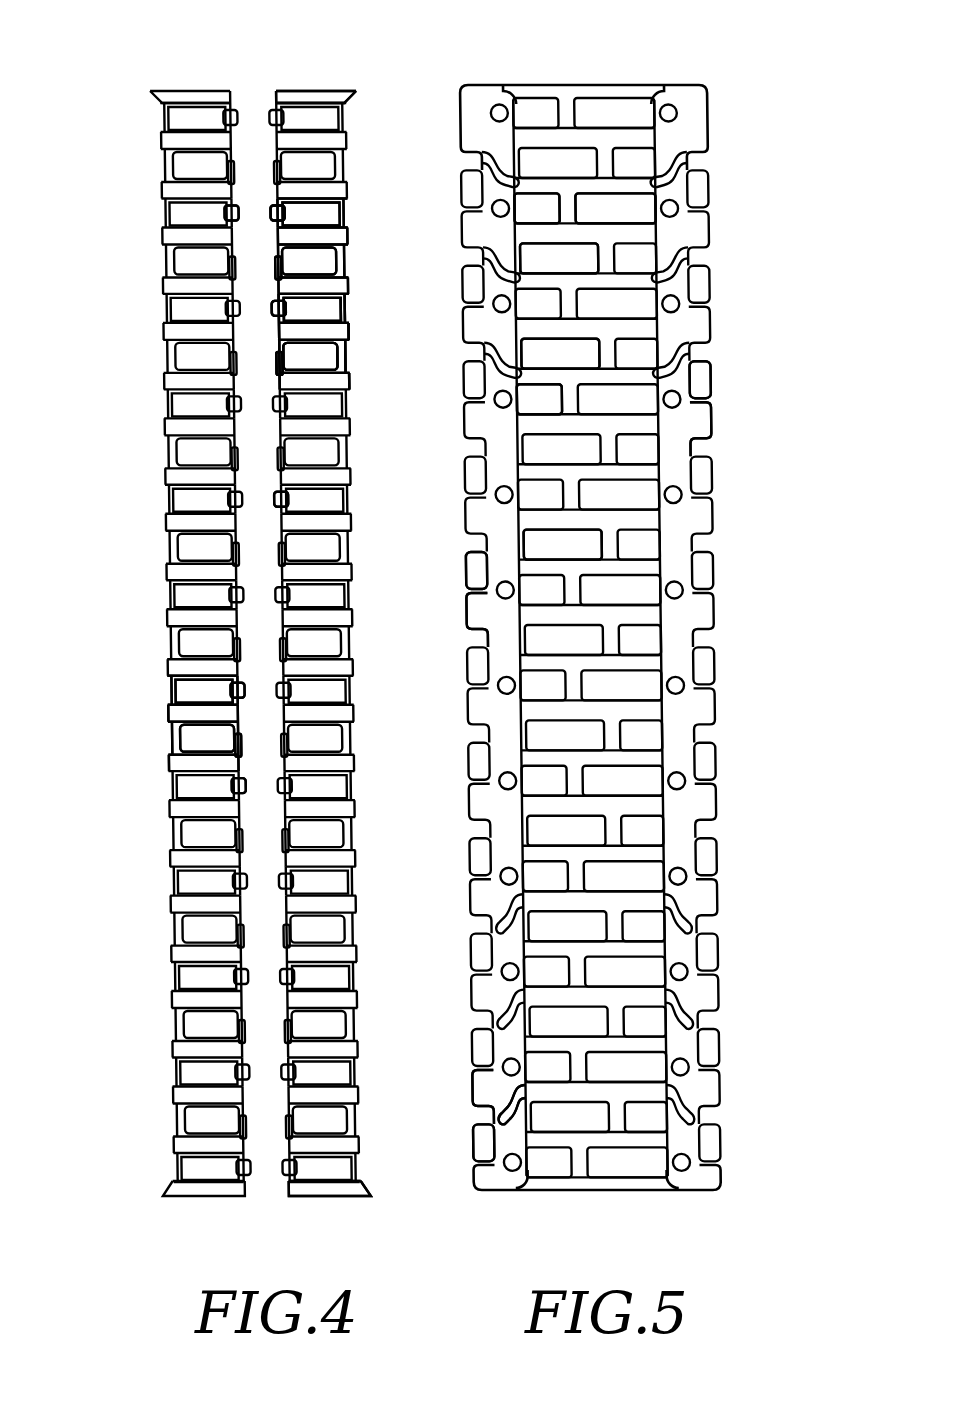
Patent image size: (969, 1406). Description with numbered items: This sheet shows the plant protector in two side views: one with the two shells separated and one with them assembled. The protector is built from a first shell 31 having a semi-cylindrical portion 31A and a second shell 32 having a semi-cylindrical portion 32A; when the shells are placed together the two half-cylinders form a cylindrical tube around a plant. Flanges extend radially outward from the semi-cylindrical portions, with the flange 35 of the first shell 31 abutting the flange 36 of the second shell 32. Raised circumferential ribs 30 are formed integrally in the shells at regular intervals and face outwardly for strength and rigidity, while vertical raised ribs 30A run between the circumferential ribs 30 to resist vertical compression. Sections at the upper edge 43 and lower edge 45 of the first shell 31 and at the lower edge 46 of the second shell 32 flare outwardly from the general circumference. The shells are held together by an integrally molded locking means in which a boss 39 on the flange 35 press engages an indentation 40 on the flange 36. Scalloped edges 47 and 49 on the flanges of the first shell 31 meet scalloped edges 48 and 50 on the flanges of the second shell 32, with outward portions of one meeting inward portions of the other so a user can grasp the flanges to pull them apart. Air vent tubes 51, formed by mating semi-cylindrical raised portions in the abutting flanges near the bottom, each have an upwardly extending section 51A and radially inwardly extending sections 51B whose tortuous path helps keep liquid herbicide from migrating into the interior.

In FIG. 4, the circumferential ribs 30 is at (348, 233).
In FIG. 5, the circumferential ribs 30 is at (519, 753).
In FIG. 4, the vertical raised ribs 30A is at (346, 312).
In FIG. 5, the vertical raised ribs 30A is at (574, 206).
In FIG. 4, the first shell 31 is at (157, 150).
In FIG. 4, the semi-cylindrical portion 31A is at (164, 688).
In FIG. 4, the second shell 32 is at (346, 150).
In FIG. 5, the second shell 32 is at (591, 541).
In FIG. 4, the semi-cylindrical portion 32A is at (328, 358).
In FIG. 5, the semi-cylindrical portion 32A is at (596, 352).
In FIG. 4, the flange 35 is at (229, 238).
In FIG. 4, the flange 36 is at (284, 230).
In FIG. 4, the boss 39 is at (224, 785).
In FIG. 4, the indentation 40 is at (289, 497).
In FIG. 4, the upper edge 43 is at (307, 88).
In FIG. 5, the upper edge 43 is at (563, 83).
In FIG. 4, the lower edge 45 is at (338, 1198).
In FIG. 5, the lower edge 46 is at (513, 1193).
In FIG. 5, the scalloped edge 47 is at (461, 578).
In FIG. 5, the scalloped edge 48 is at (463, 616).
In FIG. 5, the scalloped edge 49 is at (718, 427).
In FIG. 5, the scalloped edge 50 is at (718, 382).
In FIG. 5, the air vent tubes 51 is at (690, 183).
In FIG. 5, the upwardly extending section 51A is at (503, 1100).
In FIG. 5, the radially inwardly extending sections 51B is at (505, 1069).